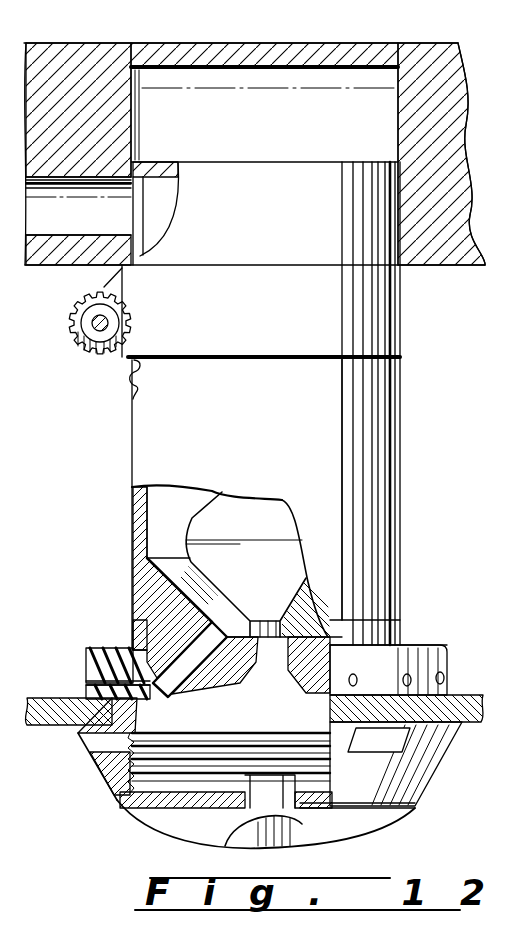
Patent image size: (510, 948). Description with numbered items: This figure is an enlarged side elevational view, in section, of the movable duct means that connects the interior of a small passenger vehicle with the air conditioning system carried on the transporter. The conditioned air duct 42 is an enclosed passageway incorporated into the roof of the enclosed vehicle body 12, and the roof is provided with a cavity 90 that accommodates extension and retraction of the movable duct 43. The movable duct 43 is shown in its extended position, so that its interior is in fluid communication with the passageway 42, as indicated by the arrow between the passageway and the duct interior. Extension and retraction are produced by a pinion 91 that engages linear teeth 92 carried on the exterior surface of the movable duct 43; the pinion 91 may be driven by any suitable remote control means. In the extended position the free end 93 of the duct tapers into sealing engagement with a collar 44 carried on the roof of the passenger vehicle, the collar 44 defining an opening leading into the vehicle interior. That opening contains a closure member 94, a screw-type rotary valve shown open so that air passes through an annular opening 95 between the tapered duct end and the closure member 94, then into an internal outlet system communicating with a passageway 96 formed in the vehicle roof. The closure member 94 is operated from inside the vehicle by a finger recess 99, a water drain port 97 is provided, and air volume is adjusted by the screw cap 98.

The vehicle body 12 is at (422, 55).
The cavity 90 is at (312, 80).
The conditioned air duct 42 is at (160, 223).
The pinion 91 is at (80, 350).
The linear teeth 92 is at (131, 368).
The movable duct 43 is at (270, 453).
The collar 44 is at (86, 656).
The free end 93 is at (133, 642).
The water drain port 97 is at (86, 684).
The annular opening 95 is at (165, 690).
The closure member 94 is at (284, 706).
The passageway 96 is at (95, 742).
The screw cap 98 is at (395, 812).
The finger recess 99 is at (262, 838).